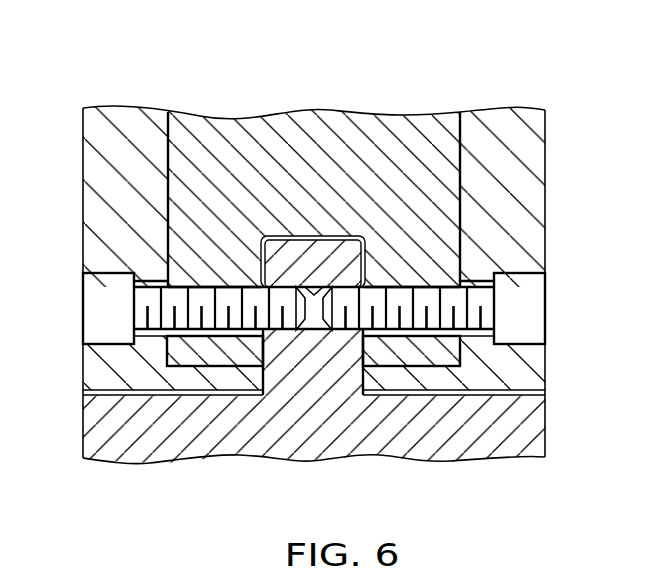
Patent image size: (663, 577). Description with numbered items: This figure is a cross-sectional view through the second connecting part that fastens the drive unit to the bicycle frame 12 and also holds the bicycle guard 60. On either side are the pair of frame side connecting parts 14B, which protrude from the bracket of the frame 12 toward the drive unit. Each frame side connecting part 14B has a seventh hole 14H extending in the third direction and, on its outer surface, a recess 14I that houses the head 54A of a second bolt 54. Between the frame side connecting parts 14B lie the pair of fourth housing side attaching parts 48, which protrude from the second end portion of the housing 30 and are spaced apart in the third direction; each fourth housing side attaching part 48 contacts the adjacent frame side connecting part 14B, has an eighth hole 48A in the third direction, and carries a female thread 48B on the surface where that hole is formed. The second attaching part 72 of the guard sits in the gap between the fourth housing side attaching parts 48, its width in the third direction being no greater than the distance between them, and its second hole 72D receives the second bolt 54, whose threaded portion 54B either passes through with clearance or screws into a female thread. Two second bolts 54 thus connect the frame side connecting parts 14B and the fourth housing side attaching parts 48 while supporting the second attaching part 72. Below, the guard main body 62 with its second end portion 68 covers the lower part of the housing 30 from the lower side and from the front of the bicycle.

The frame 12 is at (100, 88).
The housing 30 is at (317, 150).
The bicycle guard 60 is at (498, 468).
The frame side connecting part 14B is at (84, 173).
The seventh hole 14H is at (130, 290).
The recess 14I is at (100, 274).
The fourth housing side attaching part 48 is at (215, 207).
The eighth hole 48A is at (193, 290).
The female thread 48B is at (243, 287).
The second attaching part 72 is at (292, 252).
The second hole 72D is at (318, 292).
The second bolt 54 is at (150, 338).
The head 54A is at (90, 315).
The threaded portion 54B is at (343, 329).
The guard main body 62 is at (203, 446).
The second end portion 68 is at (255, 446).